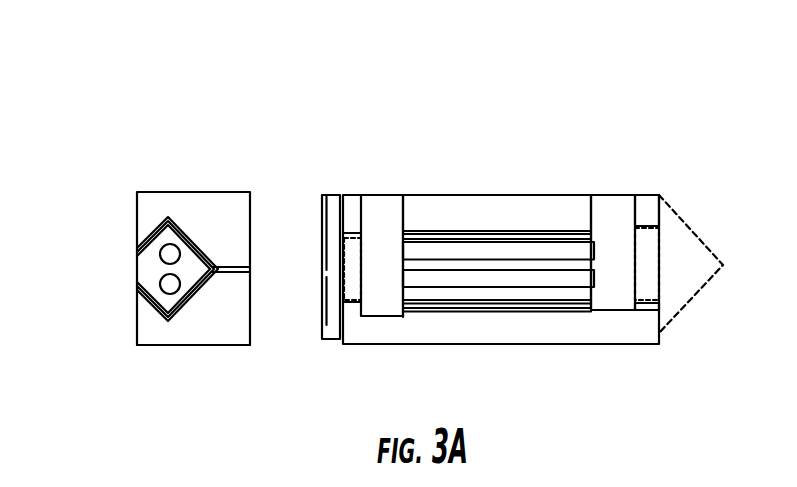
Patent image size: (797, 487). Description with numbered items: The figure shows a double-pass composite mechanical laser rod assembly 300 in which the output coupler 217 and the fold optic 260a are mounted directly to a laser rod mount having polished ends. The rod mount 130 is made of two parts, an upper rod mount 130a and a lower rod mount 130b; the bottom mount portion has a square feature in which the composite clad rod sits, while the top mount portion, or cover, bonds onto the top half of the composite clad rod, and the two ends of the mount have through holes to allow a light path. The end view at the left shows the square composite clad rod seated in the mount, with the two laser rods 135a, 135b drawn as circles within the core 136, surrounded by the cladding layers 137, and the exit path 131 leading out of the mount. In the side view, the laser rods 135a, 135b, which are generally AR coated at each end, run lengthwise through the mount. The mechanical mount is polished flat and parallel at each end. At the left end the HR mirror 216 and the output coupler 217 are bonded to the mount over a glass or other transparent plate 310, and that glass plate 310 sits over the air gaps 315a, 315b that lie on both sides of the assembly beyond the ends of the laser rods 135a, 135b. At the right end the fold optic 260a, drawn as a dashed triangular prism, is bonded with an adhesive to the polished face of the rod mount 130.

The laser rod assembly 300 is at (603, 97).
The rod mount 130 is at (445, 213).
The upper rod mount 130a is at (190, 205).
The lower rod mount 130b is at (173, 328).
The output beam / waveguide exit 131 is at (227, 273).
The laser rod 135a is at (163, 252).
The laser rod 135b is at (163, 287).
The gain medium core 136 is at (148, 269).
The cladding layers 137 is at (158, 238).
The HR mirror 216 is at (322, 220).
The output coupler 217 is at (322, 325).
The fold optic 260a is at (685, 258).
The glass plate 310 is at (335, 202).
The air gap 315a is at (349, 236).
The air gap 315b is at (380, 218).